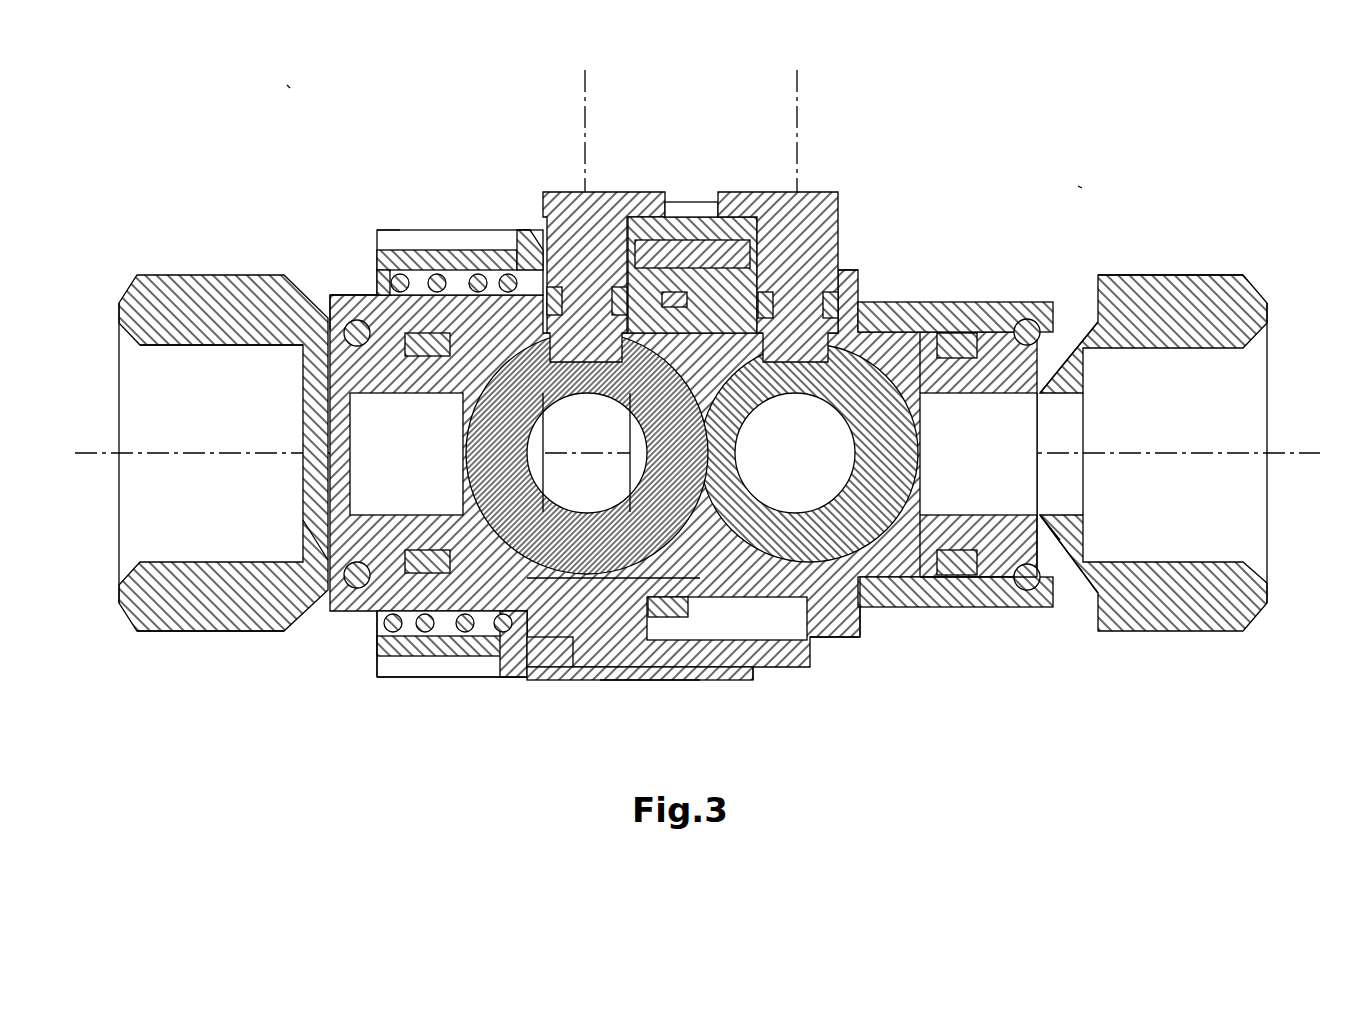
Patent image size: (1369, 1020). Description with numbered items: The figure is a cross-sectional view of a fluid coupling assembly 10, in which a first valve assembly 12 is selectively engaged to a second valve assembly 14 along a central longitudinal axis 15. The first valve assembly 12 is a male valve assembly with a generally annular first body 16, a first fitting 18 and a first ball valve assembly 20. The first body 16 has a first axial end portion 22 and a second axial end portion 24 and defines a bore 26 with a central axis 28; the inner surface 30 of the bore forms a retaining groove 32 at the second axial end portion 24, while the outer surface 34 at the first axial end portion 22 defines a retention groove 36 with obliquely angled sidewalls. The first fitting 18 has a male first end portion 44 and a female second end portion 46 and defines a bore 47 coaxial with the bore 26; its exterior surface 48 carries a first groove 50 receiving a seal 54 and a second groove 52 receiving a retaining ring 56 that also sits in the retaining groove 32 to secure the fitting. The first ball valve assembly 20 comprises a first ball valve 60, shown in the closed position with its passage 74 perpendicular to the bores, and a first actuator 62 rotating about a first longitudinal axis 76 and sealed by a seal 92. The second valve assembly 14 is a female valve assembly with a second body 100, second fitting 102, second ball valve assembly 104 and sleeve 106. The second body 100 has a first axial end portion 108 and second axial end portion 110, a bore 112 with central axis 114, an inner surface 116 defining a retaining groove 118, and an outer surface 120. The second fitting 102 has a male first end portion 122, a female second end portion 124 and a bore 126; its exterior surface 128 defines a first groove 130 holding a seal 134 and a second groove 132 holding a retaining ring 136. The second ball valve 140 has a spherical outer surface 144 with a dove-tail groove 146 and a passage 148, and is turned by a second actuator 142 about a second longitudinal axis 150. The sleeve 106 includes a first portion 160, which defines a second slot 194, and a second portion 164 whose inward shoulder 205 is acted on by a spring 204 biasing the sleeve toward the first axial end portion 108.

The fluid coupling assembly 10 is at (290, 86).
The first valve assembly 12 is at (1080, 186).
The second valve assembly 14 is at (302, 245).
The central longitudinal axis 15 is at (1300, 450).
The first body 16 is at (978, 298).
The first fitting 18 is at (1197, 270).
The first ball valve assembly 20 is at (828, 160).
The first axial end portion 22 is at (800, 667).
The second axial end portion 24 is at (1045, 605).
The bore 26 is at (800, 512).
The central axis 28 is at (950, 457).
The inner surface 30 is at (915, 330).
The retaining groove 32 is at (1020, 590).
The outer surface 34 is at (695, 645).
The retention groove 36 is at (690, 617).
The first end portion 44 is at (970, 582).
The second end portion 46 is at (1190, 632).
The bore 47 is at (1062, 400).
The exterior surface 48 is at (1027, 320).
The first groove 50 is at (945, 548).
The second groove 52 is at (1037, 560).
The seal 54 is at (962, 550).
The retaining ring 56 is at (1058, 558).
The first ball valve 60 is at (865, 560).
The first actuator 62 is at (842, 200).
The passage 74 is at (822, 640).
The first longitudinal axis 76 is at (805, 96).
The seal 92 is at (833, 306).
The second body 100 is at (455, 292).
The second fitting 102 is at (215, 273).
The second ball valve assembly 104 is at (548, 186).
The sleeve 106 is at (473, 678).
The first axial end portion 108 is at (748, 682).
The second axial end portion 110 is at (435, 275).
The bore 112 is at (462, 545).
The central axis 114 is at (205, 452).
The inner surface 116 is at (535, 660).
The retaining groove 118 is at (378, 300).
The outer surface 120 is at (655, 672).
The first end portion 122 is at (372, 612).
The second end portion 124 is at (162, 632).
The bore 126 is at (406, 454).
The exterior surface 128 is at (350, 586).
The first groove 130 is at (442, 632).
The second groove 132 is at (348, 342).
The seal 134 is at (428, 358).
The retaining ring 136 is at (340, 568).
The second ball valve 140 is at (592, 578).
The second actuator 142 is at (626, 190).
The outer surface 144 is at (568, 582).
The groove 146 is at (585, 395).
The passage 148 is at (587, 511).
The second longitudinal axis 150 is at (600, 102).
The first portion 160 is at (640, 682).
The second portion 164 is at (386, 678).
The second slot 194 is at (838, 252).
The spring 204 is at (395, 278).
The shoulder 205 is at (528, 262).